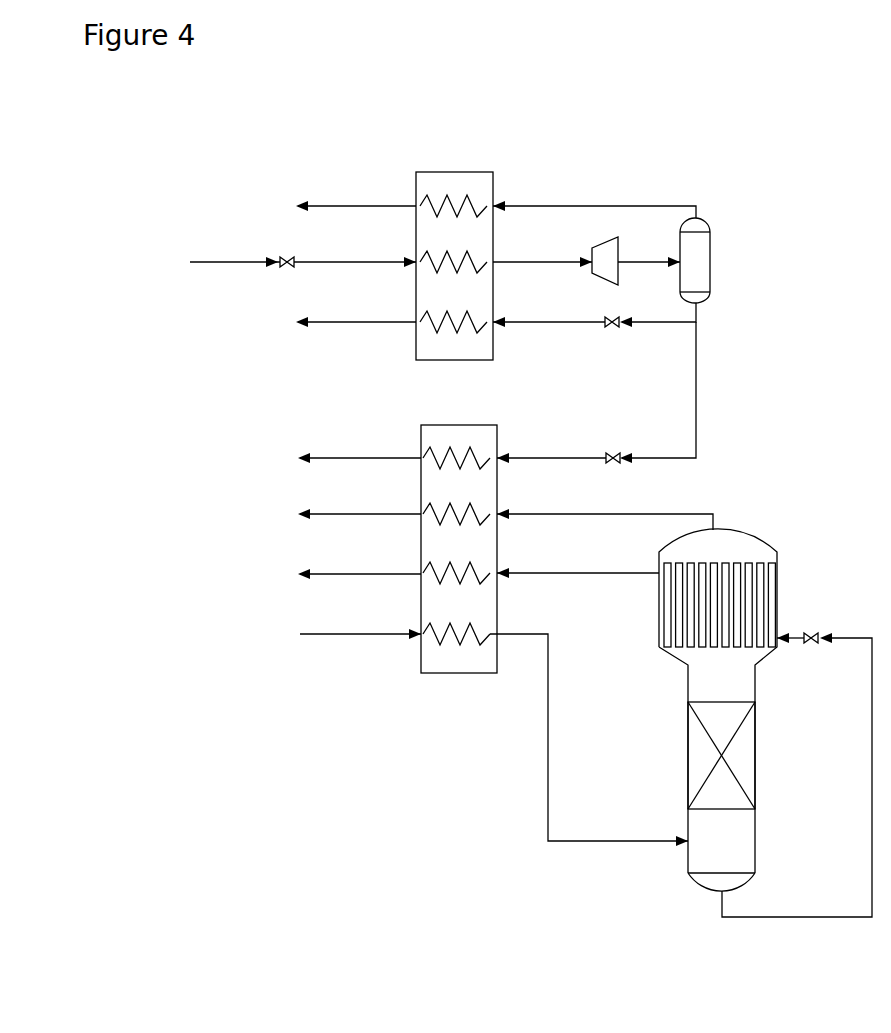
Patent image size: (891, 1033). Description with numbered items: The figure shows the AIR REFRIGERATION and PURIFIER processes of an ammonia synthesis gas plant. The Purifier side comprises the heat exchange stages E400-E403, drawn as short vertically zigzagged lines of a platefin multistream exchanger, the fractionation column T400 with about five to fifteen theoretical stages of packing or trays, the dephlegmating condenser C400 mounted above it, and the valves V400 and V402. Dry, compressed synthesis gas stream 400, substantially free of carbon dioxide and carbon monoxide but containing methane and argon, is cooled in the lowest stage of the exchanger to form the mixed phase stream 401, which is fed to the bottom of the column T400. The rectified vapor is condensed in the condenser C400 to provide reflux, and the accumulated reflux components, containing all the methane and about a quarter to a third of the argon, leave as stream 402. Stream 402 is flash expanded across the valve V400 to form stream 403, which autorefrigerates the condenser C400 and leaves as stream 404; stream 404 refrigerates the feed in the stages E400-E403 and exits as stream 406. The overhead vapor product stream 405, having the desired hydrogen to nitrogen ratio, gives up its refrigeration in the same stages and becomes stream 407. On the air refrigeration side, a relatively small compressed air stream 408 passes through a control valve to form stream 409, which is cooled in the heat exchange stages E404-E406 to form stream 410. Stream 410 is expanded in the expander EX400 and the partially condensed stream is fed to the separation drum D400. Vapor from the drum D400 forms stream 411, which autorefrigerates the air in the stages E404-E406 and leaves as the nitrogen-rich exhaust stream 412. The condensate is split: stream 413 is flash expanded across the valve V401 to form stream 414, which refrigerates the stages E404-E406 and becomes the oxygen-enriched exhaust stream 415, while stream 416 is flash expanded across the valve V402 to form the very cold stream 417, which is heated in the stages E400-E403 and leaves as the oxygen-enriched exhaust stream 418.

The synthesis gas feed stream 400 is at (339, 634).
The cooled mixed phase feed stream 401 is at (589, 740).
The rectifying reflux stream 402 is at (797, 775).
The flash expanded reflux stream 403 is at (795, 634).
The waste gas refrigerant stream 404 is at (578, 562).
The column overhead vapor product stream 405 is at (605, 508).
The warmed waste gas stream 406 is at (339, 574).
The warmed synthesis gas product stream 407 is at (339, 514).
The compressed air stream 408 is at (222, 262).
The controlled air feed stream 409 is at (355, 250).
The cooled air stream 410 is at (586, 250).
The drum vapor stream 411 is at (594, 199).
The nitrogen-rich exhaust gas stream 412 is at (334, 207).
The first condensate stream 413 is at (658, 323).
The expanded condensate refrigerant stream 414 is at (549, 310).
The oxygen-enriched exhaust stream 415 is at (337, 323).
The second condensate stream 416 is at (658, 392).
The very cold expanded condensate stream 417 is at (551, 447).
The oxygen-enriched exhaust stream 418 is at (339, 458).
The Purifier heat exchange stages E400-E403 is at (454, 536).
The air refrigeration heat exchange stages E404-E406 is at (483, 143).
The expander EX400 is at (620, 247).
The separation drum D400 is at (712, 258).
The valve V400 is at (805, 644).
The valve V401 is at (612, 332).
The valve V402 is at (617, 452).
The dephlegmating condenser C400 is at (765, 588).
The fractionation column T400 is at (688, 740).